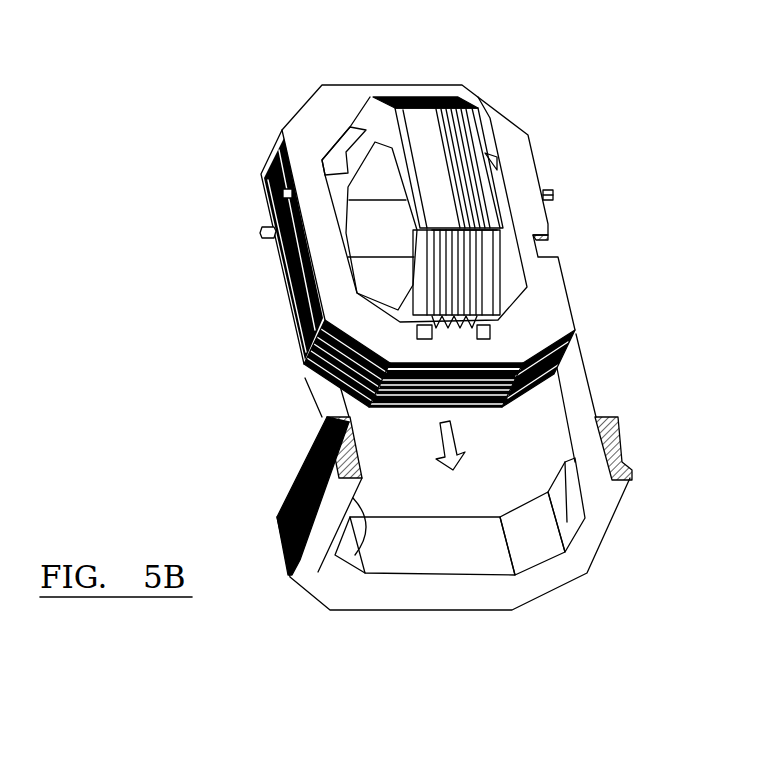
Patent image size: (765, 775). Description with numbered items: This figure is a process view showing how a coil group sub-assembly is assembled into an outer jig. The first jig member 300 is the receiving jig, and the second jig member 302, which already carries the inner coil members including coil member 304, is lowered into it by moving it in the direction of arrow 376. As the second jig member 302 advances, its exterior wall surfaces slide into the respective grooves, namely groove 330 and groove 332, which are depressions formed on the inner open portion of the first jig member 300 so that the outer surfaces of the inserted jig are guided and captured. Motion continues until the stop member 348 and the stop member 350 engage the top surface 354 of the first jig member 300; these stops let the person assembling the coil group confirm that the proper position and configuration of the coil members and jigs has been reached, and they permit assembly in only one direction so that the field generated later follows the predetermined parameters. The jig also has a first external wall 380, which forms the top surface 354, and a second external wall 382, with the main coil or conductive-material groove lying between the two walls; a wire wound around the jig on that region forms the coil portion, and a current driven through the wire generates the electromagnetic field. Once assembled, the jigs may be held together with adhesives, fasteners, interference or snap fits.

The first jig member 300 is at (530, 618).
The second jig member 302 is at (520, 118).
The coil member 304 is at (480, 120).
The groove 330 is at (347, 560).
The groove 332 is at (598, 477).
The stop member 348 is at (553, 190).
The stop member 350 is at (262, 189).
The top surface 354 is at (617, 495).
The arrow 376 is at (460, 440).
The first external wall 380 is at (277, 248).
The second external wall 382 is at (550, 222).